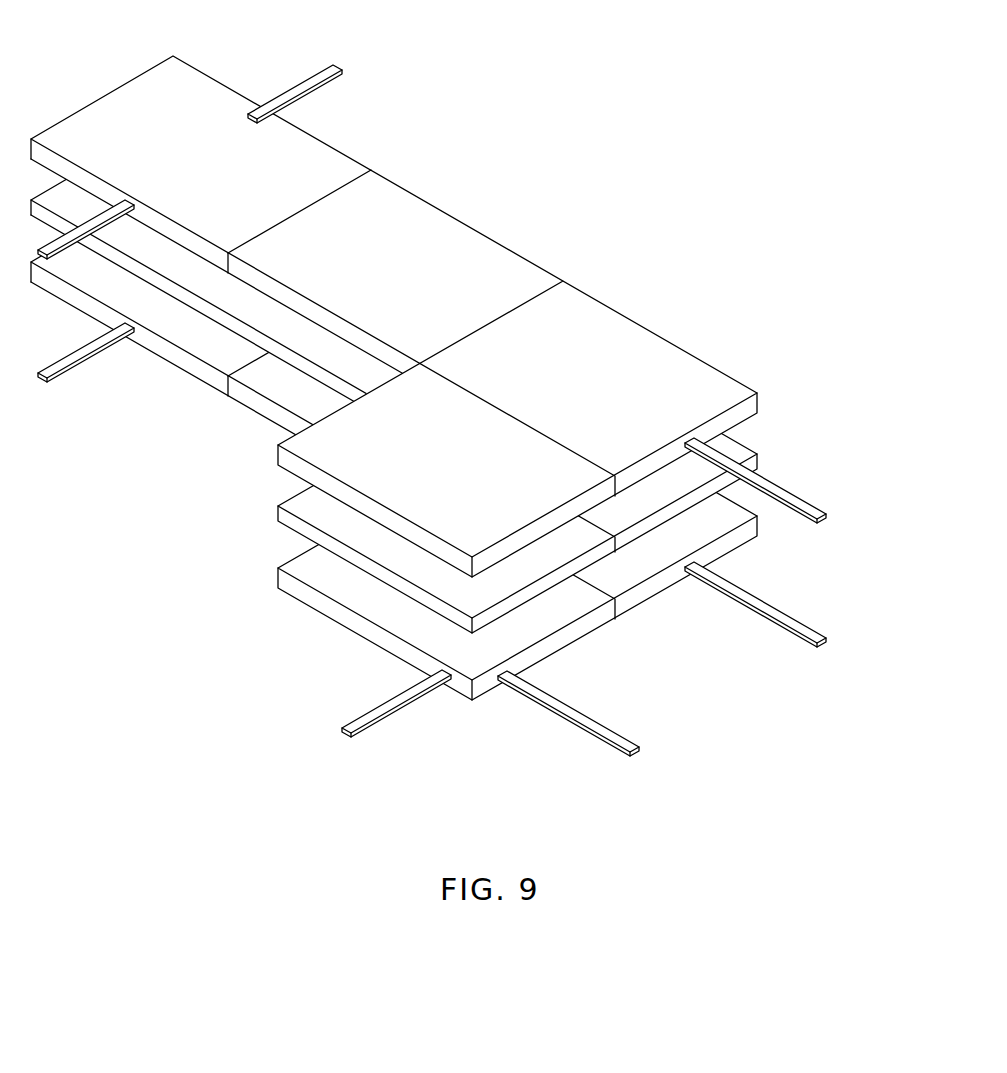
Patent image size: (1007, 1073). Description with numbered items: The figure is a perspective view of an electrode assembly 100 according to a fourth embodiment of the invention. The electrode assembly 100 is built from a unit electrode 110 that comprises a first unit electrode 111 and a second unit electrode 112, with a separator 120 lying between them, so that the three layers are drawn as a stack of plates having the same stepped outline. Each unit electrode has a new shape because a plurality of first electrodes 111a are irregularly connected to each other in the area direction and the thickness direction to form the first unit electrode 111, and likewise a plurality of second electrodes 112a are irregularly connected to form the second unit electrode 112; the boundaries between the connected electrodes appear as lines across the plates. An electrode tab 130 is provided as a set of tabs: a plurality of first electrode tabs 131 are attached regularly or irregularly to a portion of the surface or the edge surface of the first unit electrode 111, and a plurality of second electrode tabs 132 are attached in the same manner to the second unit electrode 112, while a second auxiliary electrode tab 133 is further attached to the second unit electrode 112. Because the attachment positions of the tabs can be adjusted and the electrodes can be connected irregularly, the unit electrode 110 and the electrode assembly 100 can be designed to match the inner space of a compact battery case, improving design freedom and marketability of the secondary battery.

The electrode assembly 100 is at (493, 379).
The unit electrode 110 is at (472, 403).
The first unit electrode 111 is at (394, 316).
The first electrode 111a is at (702, 158).
The second unit electrode 112 is at (394, 464).
The second electrode 112a is at (267, 383).
The separator 120 is at (743, 453).
The electrode tab 130 is at (727, 597).
The first electrode tab 131 is at (822, 518).
The second electrode tab 132 is at (803, 633).
The second auxiliary electrode tab 133 is at (640, 752).